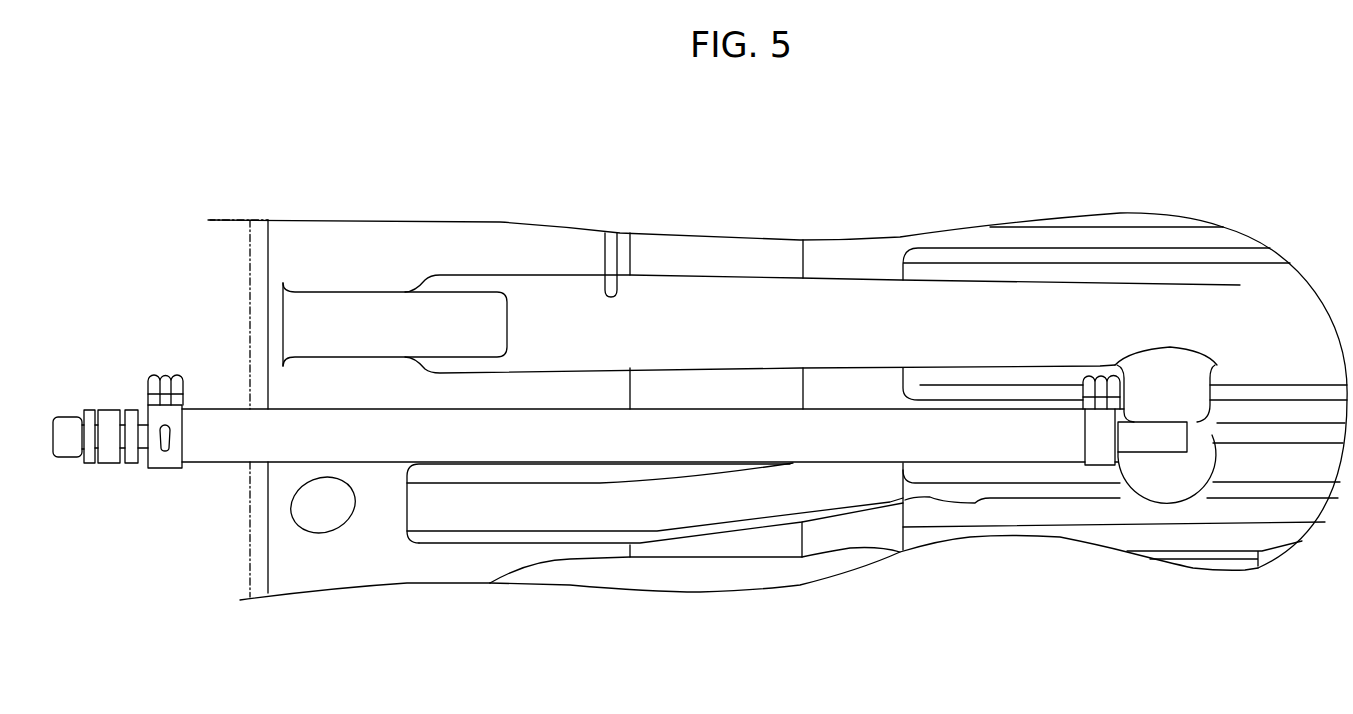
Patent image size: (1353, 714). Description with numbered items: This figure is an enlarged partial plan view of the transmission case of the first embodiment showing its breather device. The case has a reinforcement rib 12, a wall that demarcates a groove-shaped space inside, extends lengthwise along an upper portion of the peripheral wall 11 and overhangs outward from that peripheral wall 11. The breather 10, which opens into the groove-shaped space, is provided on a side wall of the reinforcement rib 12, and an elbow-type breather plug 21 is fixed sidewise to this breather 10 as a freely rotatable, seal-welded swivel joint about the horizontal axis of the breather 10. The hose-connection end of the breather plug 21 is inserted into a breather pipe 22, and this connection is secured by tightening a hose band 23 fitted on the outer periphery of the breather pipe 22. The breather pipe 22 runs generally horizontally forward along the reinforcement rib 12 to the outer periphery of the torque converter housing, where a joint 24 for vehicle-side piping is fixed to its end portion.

The breather 10 is at (1190, 423).
The peripheral wall 11 is at (867, 385).
The reinforcement rib 12 is at (748, 341).
The breather plug 21 is at (1157, 448).
The breather pipe 22 is at (235, 453).
The hose band 23 is at (1095, 423).
The joint 24 is at (112, 408).